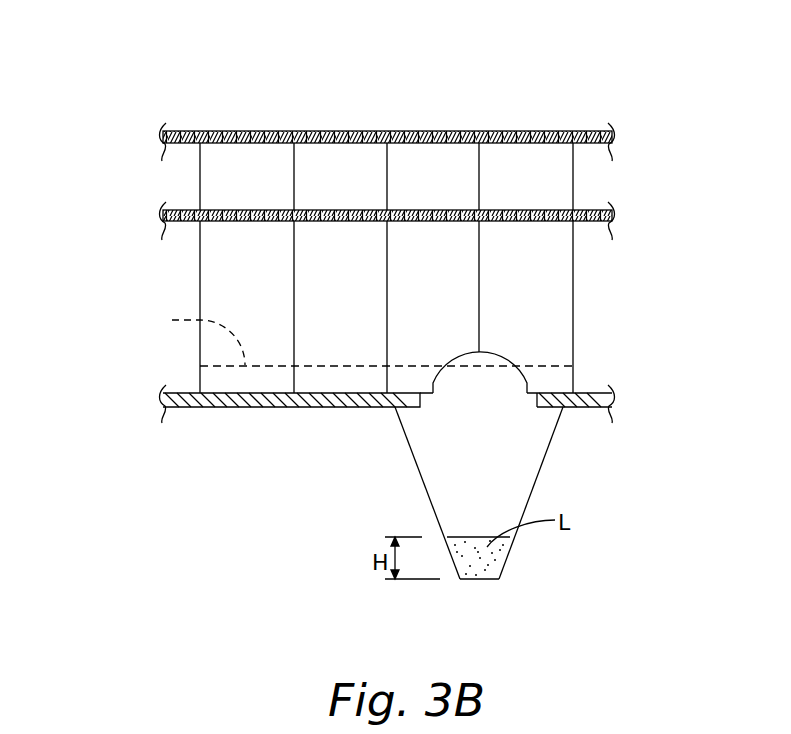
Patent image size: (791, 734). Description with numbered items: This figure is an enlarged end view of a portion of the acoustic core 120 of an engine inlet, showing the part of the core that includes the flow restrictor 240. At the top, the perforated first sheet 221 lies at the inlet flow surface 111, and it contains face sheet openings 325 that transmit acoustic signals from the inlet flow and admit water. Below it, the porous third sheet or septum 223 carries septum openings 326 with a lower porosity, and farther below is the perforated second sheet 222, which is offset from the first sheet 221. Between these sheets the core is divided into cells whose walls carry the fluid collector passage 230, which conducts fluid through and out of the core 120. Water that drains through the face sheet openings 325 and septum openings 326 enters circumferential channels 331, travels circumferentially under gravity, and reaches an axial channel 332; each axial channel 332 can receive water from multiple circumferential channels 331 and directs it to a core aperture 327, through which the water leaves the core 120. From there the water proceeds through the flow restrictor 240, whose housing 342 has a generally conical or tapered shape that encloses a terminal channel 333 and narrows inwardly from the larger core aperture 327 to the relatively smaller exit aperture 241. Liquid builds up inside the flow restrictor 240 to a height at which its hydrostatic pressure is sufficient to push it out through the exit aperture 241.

The core 120 is at (132, 180).
The inlet flow surface 111 is at (521, 132).
The first sheet 221 is at (593, 131).
The third sheet 223 is at (591, 210).
The second sheet 222 is at (220, 408).
The face sheet openings 325 is at (342, 133).
The septum openings 326 is at (470, 210).
The circumferential channels 331 is at (353, 335).
The axial channel 332 is at (506, 358).
The core aperture 327 is at (497, 395).
The housing 342 is at (427, 490).
The flow restrictor 240 is at (552, 478).
The terminal channel 333 is at (502, 513).
The fluid collector passage 230 is at (314, 436).
The exit aperture 241 is at (493, 580).